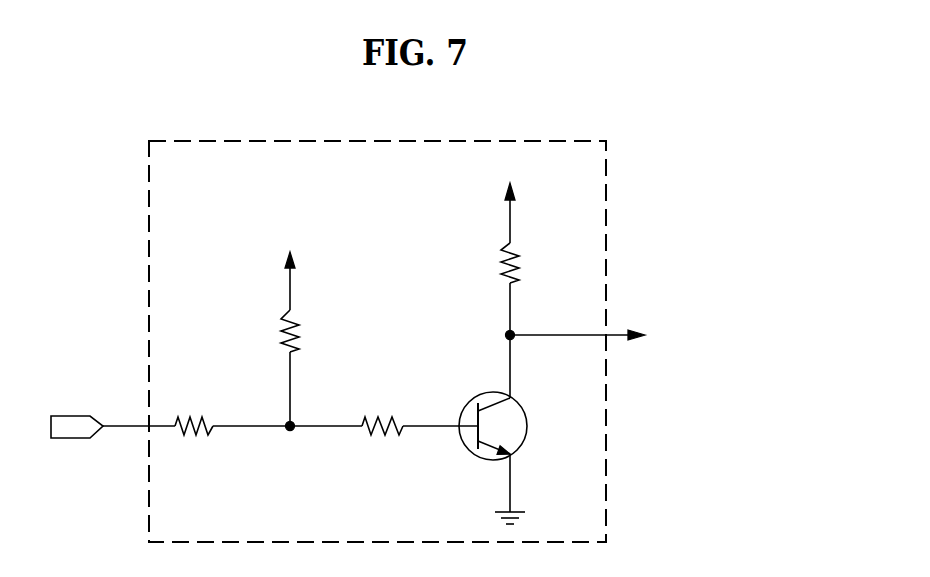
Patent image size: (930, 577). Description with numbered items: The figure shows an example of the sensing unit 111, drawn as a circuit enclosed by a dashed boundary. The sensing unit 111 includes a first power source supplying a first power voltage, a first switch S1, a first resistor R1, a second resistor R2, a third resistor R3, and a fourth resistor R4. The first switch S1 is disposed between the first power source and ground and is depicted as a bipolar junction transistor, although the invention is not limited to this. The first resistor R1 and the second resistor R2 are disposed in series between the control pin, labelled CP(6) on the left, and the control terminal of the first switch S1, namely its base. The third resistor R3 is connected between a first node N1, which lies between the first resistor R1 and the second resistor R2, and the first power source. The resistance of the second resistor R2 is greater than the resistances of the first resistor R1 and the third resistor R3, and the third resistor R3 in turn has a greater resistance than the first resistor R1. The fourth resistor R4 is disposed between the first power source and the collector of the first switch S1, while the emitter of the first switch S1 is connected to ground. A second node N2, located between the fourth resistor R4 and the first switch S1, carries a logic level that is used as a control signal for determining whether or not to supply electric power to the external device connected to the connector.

The sensing unit 111 is at (606, 222).
The check point CP(6) input terminal 6 is at (111, 411).
The first resistor R1 is at (232, 442).
The second resistor R2 is at (420, 443).
The third resistor R3 is at (303, 324).
The fourth resistor R4 is at (524, 245).
The first node N1 is at (319, 442).
The second node N2 is at (629, 361).
The first switch S1 is at (527, 426).